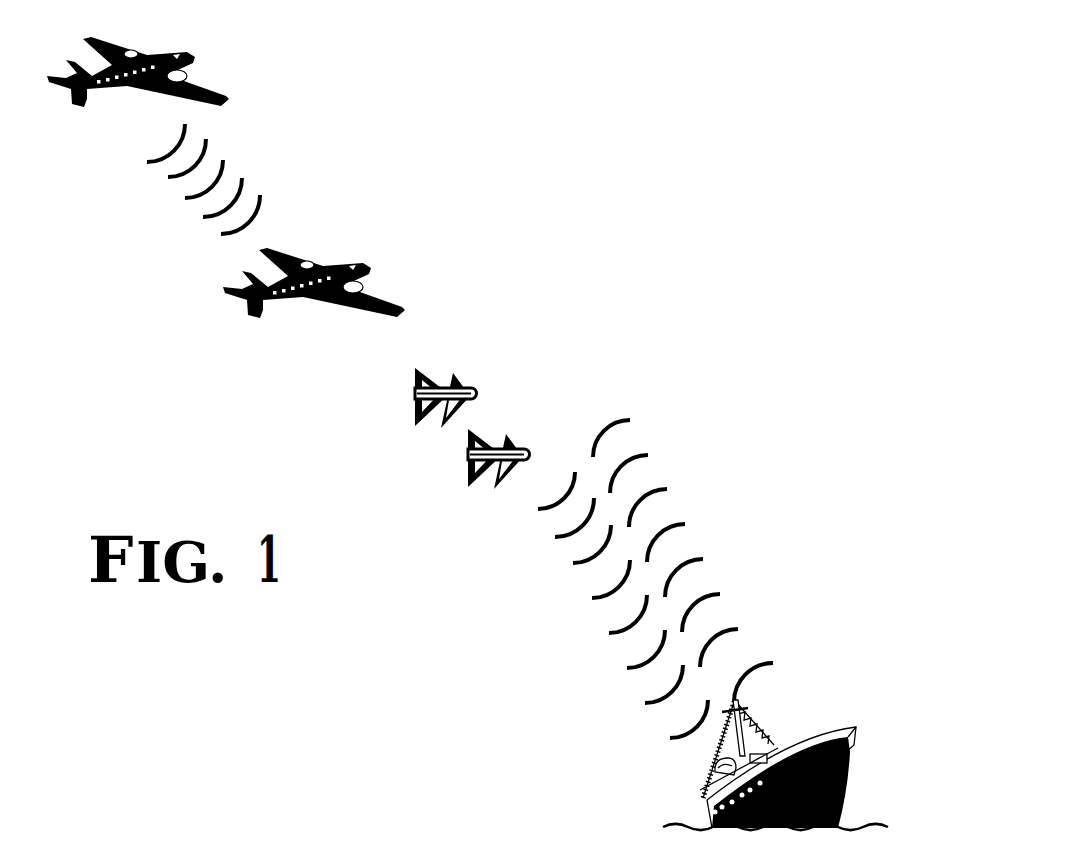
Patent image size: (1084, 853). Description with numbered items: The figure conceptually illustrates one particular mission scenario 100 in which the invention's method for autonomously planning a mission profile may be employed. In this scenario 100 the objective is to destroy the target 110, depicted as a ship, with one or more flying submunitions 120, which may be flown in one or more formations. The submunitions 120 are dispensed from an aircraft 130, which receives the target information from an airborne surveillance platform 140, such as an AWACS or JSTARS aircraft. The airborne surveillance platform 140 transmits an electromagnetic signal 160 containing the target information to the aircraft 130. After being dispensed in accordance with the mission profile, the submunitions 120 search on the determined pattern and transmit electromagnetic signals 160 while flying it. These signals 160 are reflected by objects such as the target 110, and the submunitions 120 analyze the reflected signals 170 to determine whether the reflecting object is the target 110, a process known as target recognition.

The mission scenario 100 is at (740, 27).
The target 110 is at (852, 720).
The flying submunitions 120 is at (472, 388).
The aircraft 130 is at (348, 262).
The airborne surveillance platform 140 is at (173, 50).
The electromagnetic signal 160 is at (570, 614).
The reflected signals 170 is at (745, 519).